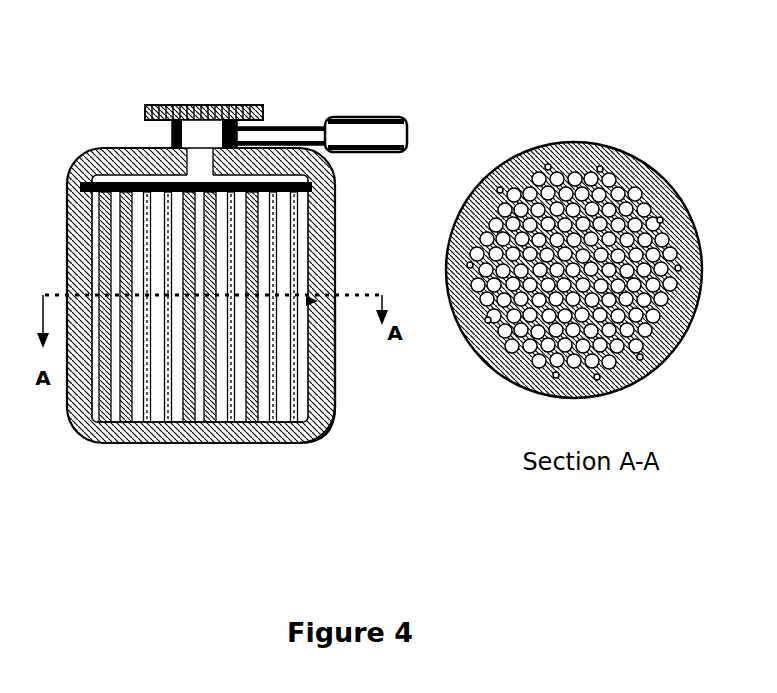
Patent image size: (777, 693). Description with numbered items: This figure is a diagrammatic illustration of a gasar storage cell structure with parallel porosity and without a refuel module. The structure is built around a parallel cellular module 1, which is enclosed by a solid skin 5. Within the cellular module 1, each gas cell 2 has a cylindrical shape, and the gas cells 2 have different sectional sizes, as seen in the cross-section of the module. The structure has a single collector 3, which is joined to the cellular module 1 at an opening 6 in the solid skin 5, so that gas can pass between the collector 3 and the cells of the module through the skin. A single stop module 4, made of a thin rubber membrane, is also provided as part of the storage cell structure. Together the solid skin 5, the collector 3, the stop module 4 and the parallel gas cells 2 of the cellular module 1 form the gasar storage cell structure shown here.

The cellular module 1 is at (118, 148).
The gas cell 2 is at (337, 355).
The collector 3 is at (258, 107).
The stop module 4 is at (302, 208).
The solid skin 5 is at (181, 439).
The opening 6 is at (210, 165).